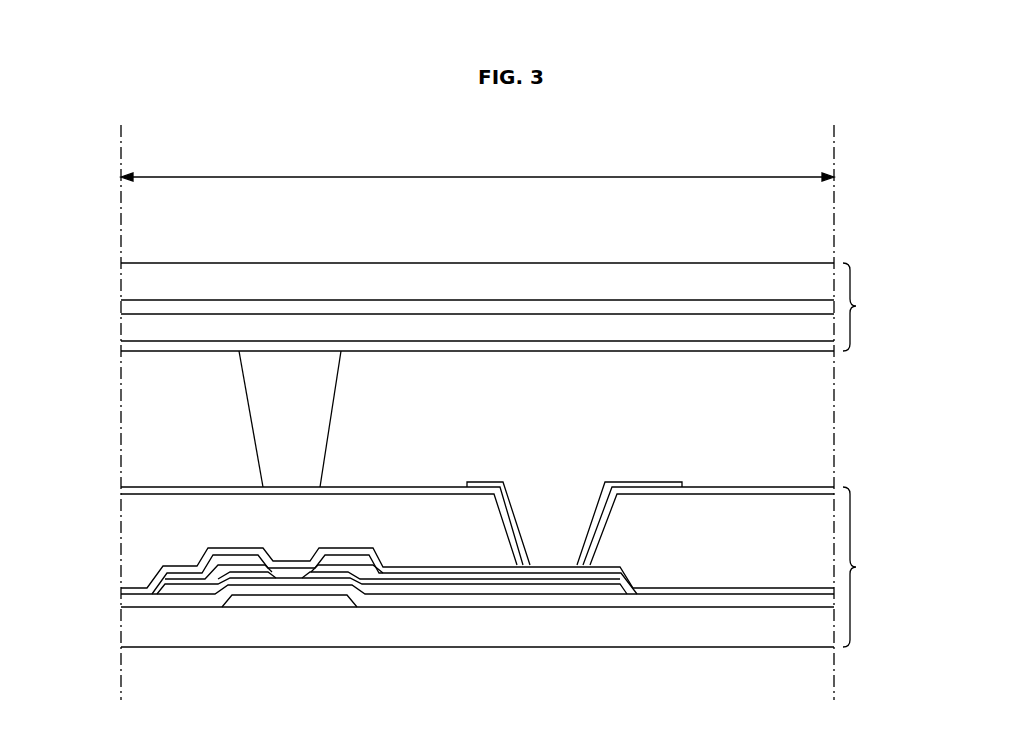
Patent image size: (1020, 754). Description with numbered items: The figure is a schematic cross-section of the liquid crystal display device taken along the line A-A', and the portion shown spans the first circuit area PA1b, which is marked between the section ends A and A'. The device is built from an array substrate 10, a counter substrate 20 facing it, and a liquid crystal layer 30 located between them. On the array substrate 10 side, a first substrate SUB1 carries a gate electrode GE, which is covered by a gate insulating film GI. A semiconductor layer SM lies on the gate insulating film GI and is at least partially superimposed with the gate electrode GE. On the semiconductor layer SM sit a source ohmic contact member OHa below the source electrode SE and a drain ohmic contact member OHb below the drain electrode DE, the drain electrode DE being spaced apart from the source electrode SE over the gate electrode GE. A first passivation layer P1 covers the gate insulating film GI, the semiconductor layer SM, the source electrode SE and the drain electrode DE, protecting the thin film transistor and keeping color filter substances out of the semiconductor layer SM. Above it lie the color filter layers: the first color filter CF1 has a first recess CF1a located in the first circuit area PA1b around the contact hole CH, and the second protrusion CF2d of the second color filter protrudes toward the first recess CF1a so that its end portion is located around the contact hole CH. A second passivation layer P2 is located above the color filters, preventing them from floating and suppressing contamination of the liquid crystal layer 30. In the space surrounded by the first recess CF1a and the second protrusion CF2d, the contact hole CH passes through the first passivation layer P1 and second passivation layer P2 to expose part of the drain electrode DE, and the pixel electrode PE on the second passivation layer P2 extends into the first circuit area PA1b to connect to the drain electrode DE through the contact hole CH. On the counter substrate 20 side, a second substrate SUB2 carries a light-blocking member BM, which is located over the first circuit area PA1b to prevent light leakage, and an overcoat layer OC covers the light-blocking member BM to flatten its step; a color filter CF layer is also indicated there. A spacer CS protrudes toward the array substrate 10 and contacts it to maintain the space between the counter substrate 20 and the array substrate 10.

The section line end A is at (121, 425).
The section line end A' is at (834, 425).
The first circuit area PA1b is at (477, 166).
The second substrate SUB2 is at (121, 283).
The light-blocking member BM is at (121, 308).
The overcoat layer OC is at (121, 322).
The color filter CF is at (121, 345).
The counter substrate 20 is at (860, 307).
The liquid crystal layer 30 is at (828, 422).
The array substrate 10 is at (860, 567).
The spacer CS is at (255, 396).
The second passivation layer P2 is at (121, 490).
The pixel electrode PE is at (662, 483).
The first passivation layer P1 is at (121, 591).
The gate insulating film GI is at (121, 598).
The first substrate SUB1 is at (123, 627).
The gate electrode GE is at (297, 600).
The semiconductor layer SM is at (348, 575).
The source ohmic contact member OHa is at (231, 568).
The drain ohmic contact member OHb is at (357, 578).
The source electrode SE is at (206, 572).
The drain electrode DE is at (437, 578).
The first color filter CF1 is at (465, 547).
The first recess CF1a is at (507, 530).
The contact hole CH is at (573, 533).
The second protrusion CF2d is at (660, 565).